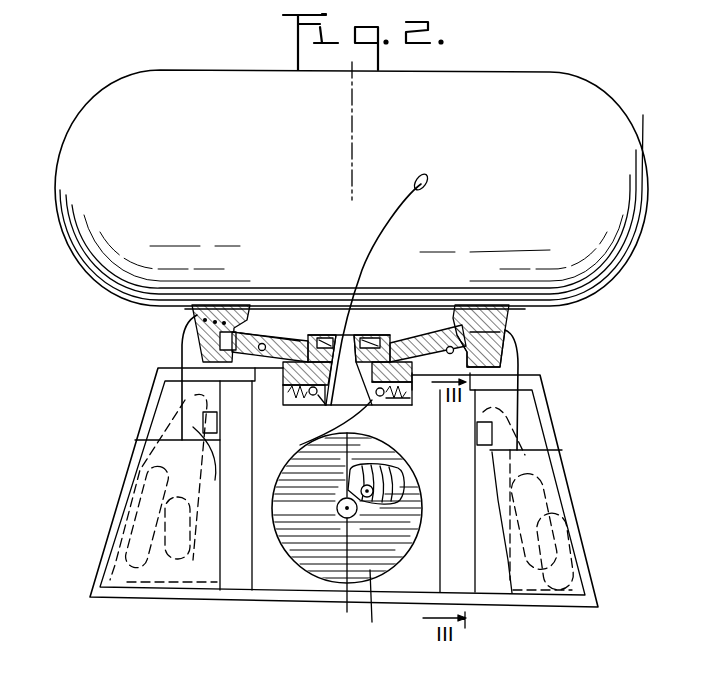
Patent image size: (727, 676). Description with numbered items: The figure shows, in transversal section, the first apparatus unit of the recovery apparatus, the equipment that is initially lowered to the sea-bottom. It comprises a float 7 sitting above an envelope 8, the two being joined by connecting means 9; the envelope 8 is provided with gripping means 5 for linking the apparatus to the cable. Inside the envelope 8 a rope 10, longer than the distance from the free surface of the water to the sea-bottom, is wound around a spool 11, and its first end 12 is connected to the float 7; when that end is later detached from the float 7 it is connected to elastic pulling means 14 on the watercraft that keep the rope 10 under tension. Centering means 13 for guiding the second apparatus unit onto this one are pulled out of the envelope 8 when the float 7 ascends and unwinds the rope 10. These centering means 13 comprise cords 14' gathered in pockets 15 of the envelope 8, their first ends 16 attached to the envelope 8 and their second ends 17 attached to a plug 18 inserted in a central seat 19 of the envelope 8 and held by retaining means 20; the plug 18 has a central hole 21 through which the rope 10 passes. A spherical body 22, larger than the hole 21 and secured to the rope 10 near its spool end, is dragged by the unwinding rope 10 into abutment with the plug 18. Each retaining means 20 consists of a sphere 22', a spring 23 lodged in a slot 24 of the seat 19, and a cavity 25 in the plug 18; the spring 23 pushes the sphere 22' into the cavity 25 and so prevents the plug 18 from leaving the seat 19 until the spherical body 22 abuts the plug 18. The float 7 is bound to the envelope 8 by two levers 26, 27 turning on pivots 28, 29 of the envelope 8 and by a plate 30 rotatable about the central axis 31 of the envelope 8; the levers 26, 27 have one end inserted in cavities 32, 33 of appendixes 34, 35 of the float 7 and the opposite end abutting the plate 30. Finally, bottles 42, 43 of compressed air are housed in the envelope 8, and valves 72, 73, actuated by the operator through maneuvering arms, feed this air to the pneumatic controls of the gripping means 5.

The gripping means 5 is at (453, 575).
The float 7 is at (92, 252).
The envelope 8 is at (538, 398).
The means for connecting the float to the envelope 9 is at (270, 386).
The rope 10 is at (351, 145).
The spool 11 is at (347, 540).
The first end of the rope 12 is at (421, 196).
The centering means 13 is at (563, 552).
The elastic pulling means 14 is at (534, 390).
The cords 14' is at (147, 377).
The pockets 15 is at (532, 575).
The first ends of the cords 16 is at (582, 593).
The second ends of the cords 17 is at (430, 340).
The plug 18 is at (380, 338).
The central seat 19 is at (303, 345).
The retaining means 20 is at (300, 406).
The central hole 21 is at (363, 310).
The spherical body 22 is at (376, 509).
The sphere 22' is at (392, 400).
The spring 23 is at (403, 405).
The slot 24 is at (409, 397).
The cavity 25 is at (368, 399).
The lever 26 is at (444, 338).
The lever 27 is at (250, 305).
The pivot 28 is at (495, 333).
The pivot 29 is at (200, 326).
The plate 30 is at (287, 333).
The central axis 31 is at (347, 622).
The cavity 32 is at (508, 334).
The cavity 33 is at (228, 346).
The appendix 34 is at (552, 272).
The appendix 35 is at (208, 330).
The bottle 42 is at (552, 500).
The bottle 43 is at (150, 567).
The valve 72 is at (480, 433).
The valve 73 is at (213, 425).